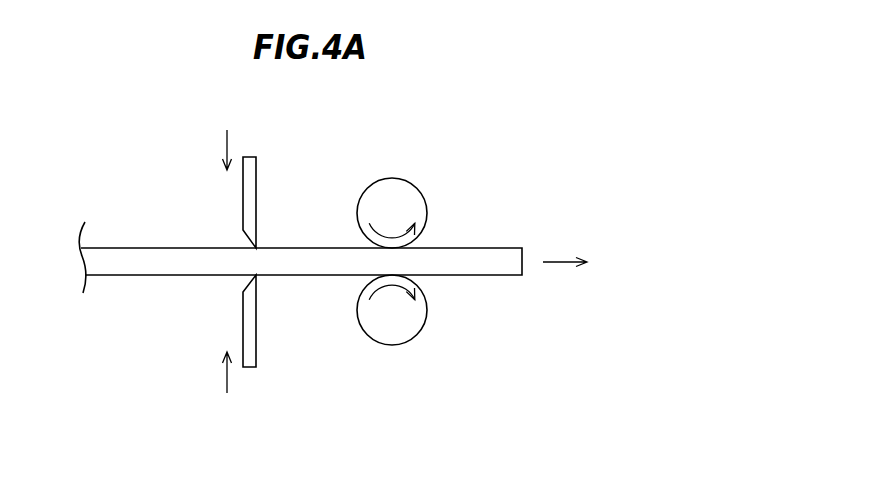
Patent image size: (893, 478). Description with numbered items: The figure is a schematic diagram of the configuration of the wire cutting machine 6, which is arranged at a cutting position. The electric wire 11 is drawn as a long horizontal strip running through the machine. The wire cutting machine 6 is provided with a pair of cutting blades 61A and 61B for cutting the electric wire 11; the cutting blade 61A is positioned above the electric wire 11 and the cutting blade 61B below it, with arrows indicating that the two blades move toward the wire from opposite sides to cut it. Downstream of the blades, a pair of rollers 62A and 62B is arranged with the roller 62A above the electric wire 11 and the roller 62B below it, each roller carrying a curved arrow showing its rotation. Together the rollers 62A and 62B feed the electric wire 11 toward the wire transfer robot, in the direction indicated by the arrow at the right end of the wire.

The electric wire 11 is at (128, 257).
The cutting blade 61A is at (250, 185).
The cutting blade 61B is at (252, 340).
The roller 62A is at (407, 195).
The roller 62B is at (408, 330).
The wire cutting machine 6 is at (511, 166).